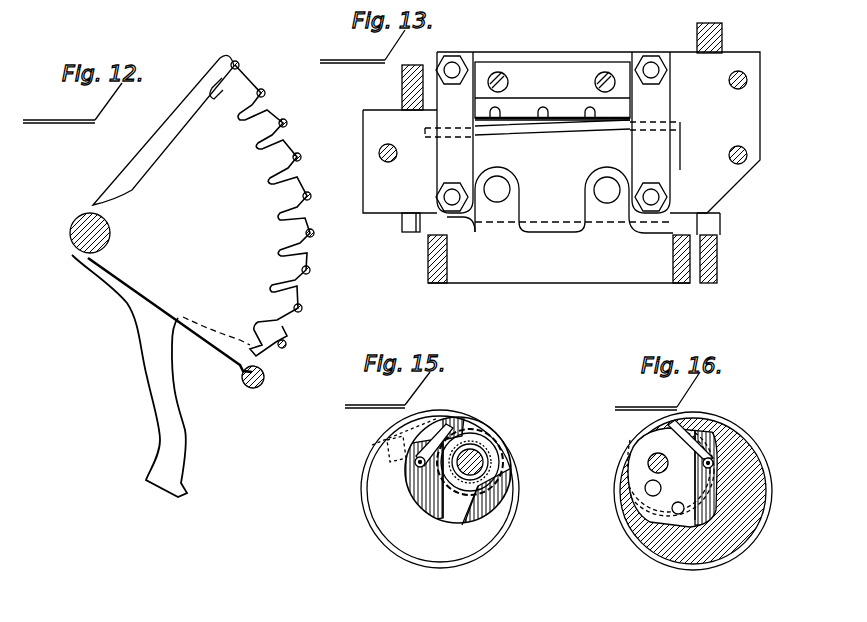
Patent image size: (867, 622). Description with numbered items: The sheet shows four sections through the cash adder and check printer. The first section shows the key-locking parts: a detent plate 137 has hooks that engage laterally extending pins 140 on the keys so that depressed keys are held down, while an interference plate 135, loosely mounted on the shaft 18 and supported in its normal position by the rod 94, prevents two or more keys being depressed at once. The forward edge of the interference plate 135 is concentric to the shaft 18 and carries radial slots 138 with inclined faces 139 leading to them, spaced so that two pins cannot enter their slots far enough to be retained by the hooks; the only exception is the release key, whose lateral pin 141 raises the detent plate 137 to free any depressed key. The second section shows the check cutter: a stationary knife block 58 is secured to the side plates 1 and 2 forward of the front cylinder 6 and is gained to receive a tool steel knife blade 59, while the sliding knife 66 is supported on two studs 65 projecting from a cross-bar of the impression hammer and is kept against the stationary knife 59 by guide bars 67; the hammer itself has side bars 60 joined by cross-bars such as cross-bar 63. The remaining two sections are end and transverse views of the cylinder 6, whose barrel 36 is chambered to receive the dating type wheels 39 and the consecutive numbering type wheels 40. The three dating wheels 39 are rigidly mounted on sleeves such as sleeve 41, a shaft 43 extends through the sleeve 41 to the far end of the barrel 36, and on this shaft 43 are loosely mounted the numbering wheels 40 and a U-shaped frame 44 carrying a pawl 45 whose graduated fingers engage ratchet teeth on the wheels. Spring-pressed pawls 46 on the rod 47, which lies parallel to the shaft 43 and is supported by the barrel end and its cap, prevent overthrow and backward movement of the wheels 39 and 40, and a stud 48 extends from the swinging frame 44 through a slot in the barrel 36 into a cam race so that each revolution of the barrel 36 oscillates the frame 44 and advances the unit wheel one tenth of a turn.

In FIG. 13, the side plate 1 is at (400, 236).
In FIG. 13, the side plate 2 is at (722, 262).
In FIG. 15, the date and consecutive number printing cylinder 6 is at (372, 530).
In FIG. 16, the date and consecutive number printing cylinder 6 is at (701, 491).
In FIG. 12, the shaft 18 is at (72, 246).
In FIG. 15, the barrel 36 is at (440, 489).
In FIG. 16, the barrel 36 is at (668, 560).
In FIG. 15, the dating type wheels 39 is at (482, 432).
In FIG. 16, the consecutive numbering type wheels 40 is at (630, 470).
In FIG. 15, the sleeve 41 is at (497, 463).
In FIG. 15, the shaft 43 is at (490, 455).
In FIG. 16, the shaft 43 is at (655, 462).
In FIG. 15, the U-shaped frame 44 is at (443, 480).
In FIG. 16, the U-shaped frame 44 is at (645, 527).
In FIG. 16, the pawl 45 is at (675, 509).
In FIG. 15, the spring-pressed pawls 46 is at (441, 440).
In FIG. 16, the spring-pressed pawls 46 is at (710, 455).
In FIG. 15, the rod 47 is at (414, 463).
In FIG. 16, the rod 47 is at (712, 463).
In FIG. 16, the stud 48 is at (650, 488).
In FIG. 13, the stationary knife block 58 is at (735, 178).
In FIG. 13, the knife blade 59 is at (598, 60).
In FIG. 13, the side bars 60 is at (432, 267).
In FIG. 13, the cross-bar 63 is at (583, 270).
In FIG. 13, the studs 65 is at (497, 182).
In FIG. 13, the sliding knife 66 is at (560, 188).
In FIG. 13, the guide bars 67 is at (553, 132).
In FIG. 12, the rod 94 is at (262, 386).
In FIG. 12, the interference plate 135 is at (170, 284).
In FIG. 12, the detent plate 137 is at (124, 178).
In FIG. 12, the radial slots 138 is at (272, 177).
In FIG. 12, the inclined faces 139 is at (293, 280).
In FIG. 12, the lateral pins 140 is at (312, 230).
In FIG. 12, the lateral pin of the release key 141 is at (286, 344).